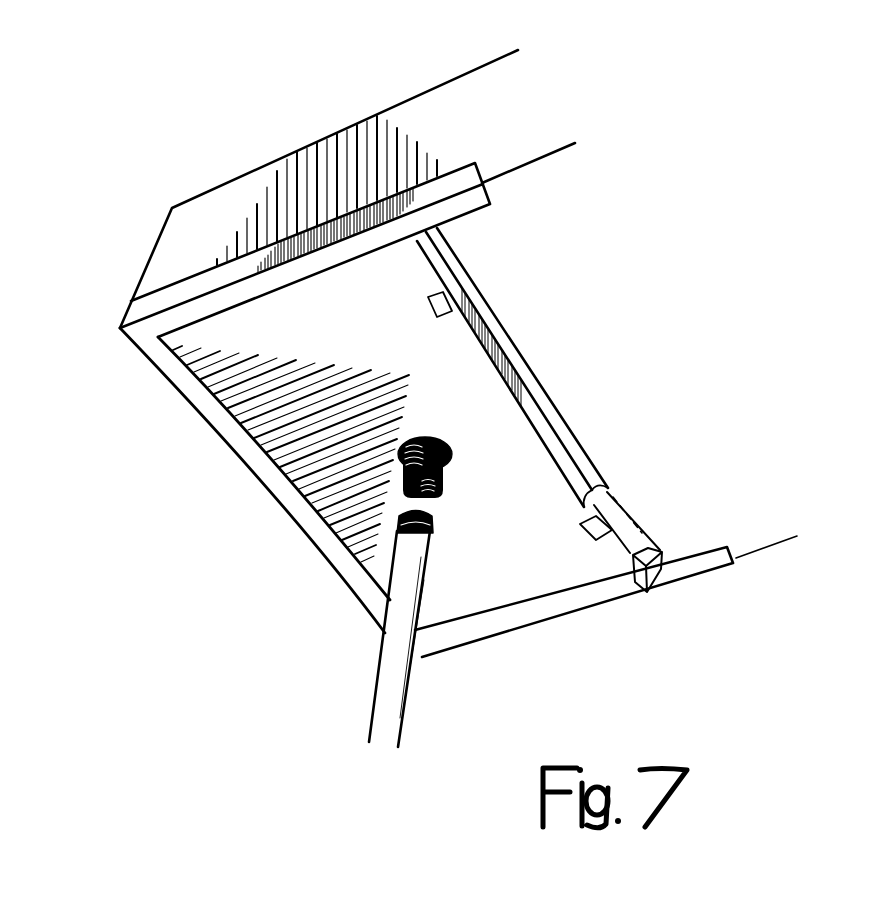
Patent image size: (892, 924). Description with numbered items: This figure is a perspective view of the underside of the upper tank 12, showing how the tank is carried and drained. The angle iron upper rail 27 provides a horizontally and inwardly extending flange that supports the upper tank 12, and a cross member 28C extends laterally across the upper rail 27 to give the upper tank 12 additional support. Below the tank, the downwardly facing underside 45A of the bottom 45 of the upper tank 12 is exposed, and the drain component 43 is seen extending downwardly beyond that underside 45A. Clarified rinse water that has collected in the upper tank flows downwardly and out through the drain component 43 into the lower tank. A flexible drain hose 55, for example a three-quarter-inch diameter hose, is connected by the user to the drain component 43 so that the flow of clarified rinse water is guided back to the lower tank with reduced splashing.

The upper tank 12 is at (197, 222).
The angle iron upper rail 27 is at (138, 305).
The cross member 28C is at (456, 262).
The drain component 43 is at (450, 445).
The bottom 45 is at (383, 560).
The underside 45A is at (542, 567).
The drain hose 55 is at (388, 712).